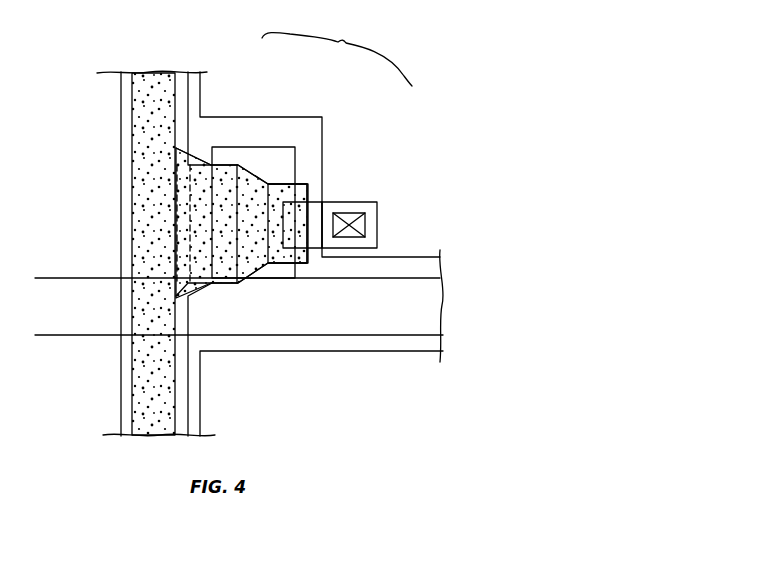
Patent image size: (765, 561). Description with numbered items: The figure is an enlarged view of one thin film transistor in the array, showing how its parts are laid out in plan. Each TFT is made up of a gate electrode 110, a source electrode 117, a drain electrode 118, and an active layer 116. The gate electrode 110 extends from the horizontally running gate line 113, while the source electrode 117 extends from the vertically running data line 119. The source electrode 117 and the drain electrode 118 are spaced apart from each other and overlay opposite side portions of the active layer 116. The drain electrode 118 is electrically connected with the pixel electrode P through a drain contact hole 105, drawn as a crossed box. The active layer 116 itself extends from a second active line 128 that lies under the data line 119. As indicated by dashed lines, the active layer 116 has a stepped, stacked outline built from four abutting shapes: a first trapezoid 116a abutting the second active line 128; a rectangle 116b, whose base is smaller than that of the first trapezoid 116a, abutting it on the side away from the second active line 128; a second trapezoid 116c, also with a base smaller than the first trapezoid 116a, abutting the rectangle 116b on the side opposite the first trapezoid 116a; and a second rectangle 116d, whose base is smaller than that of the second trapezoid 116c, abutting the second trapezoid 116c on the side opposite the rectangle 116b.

The active layer 116 is at (298, 158).
The first trapezoid 116a is at (180, 182).
The rectangle 116b is at (218, 180).
The second trapezoid 116c is at (280, 203).
The second rectangle 116d is at (299, 179).
The pixel electrode p is at (202, 98).
The data line 119 is at (122, 148).
The second active line 128 is at (134, 198).
The gate electrode 110 is at (296, 180).
The drain electrode 118 is at (372, 216).
The drain contact hole 105 is at (365, 236).
The source electrode 117 is at (238, 258).
The gate line 113 is at (348, 327).